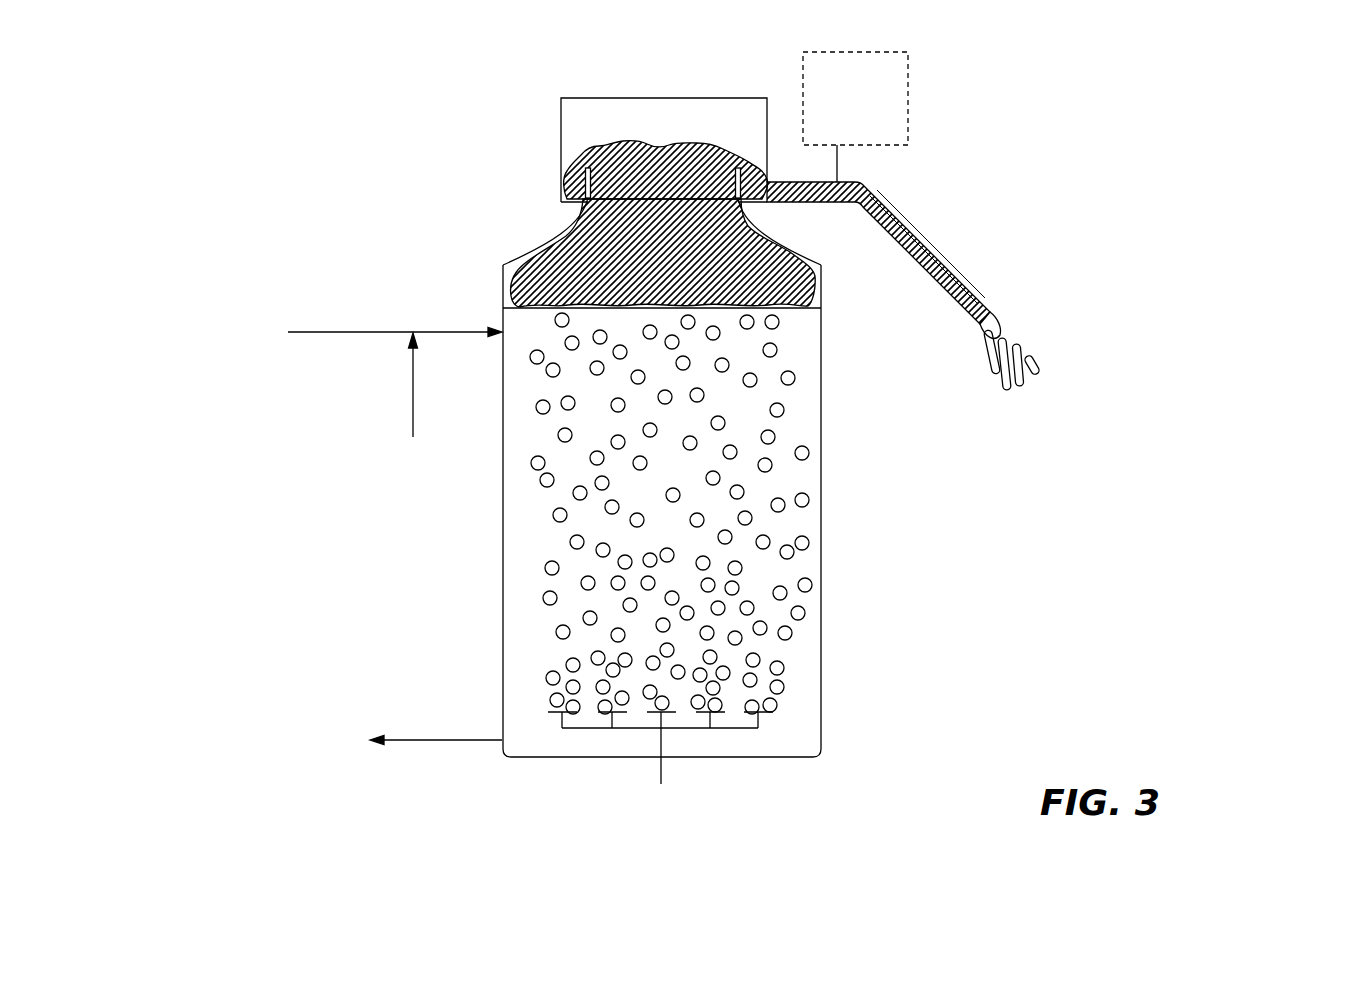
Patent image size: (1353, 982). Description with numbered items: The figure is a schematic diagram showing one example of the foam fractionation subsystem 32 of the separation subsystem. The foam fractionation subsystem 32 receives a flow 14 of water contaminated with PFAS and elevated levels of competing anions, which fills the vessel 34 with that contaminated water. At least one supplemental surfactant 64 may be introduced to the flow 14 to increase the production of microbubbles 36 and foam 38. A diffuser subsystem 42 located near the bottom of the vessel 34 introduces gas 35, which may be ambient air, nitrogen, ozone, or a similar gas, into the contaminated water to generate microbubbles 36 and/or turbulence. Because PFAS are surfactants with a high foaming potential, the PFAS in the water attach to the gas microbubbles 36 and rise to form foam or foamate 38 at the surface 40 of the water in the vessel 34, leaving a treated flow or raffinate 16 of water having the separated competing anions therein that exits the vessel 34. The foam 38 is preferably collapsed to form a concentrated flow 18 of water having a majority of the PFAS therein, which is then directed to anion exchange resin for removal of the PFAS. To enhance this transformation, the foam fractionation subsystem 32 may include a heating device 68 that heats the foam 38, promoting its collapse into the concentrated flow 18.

The flow of water contaminated with PFAS and elevated levels of competing anions 14 is at (340, 335).
The treated flow or raffinate 16 is at (433, 737).
The concentrated flow of water having a majority of the PFAS therein 18 is at (1052, 390).
The foam fractionation subsystem 32 is at (582, 76).
The vessel 34 is at (822, 528).
The gas 35 is at (656, 784).
The microbubbles 36 is at (757, 383).
The foam or foamate 38 is at (528, 270).
The surface 40 is at (823, 309).
The diffuser subsystem 42 is at (733, 729).
The supplemental surfactant 64 is at (405, 427).
The heating device 68 is at (844, 134).